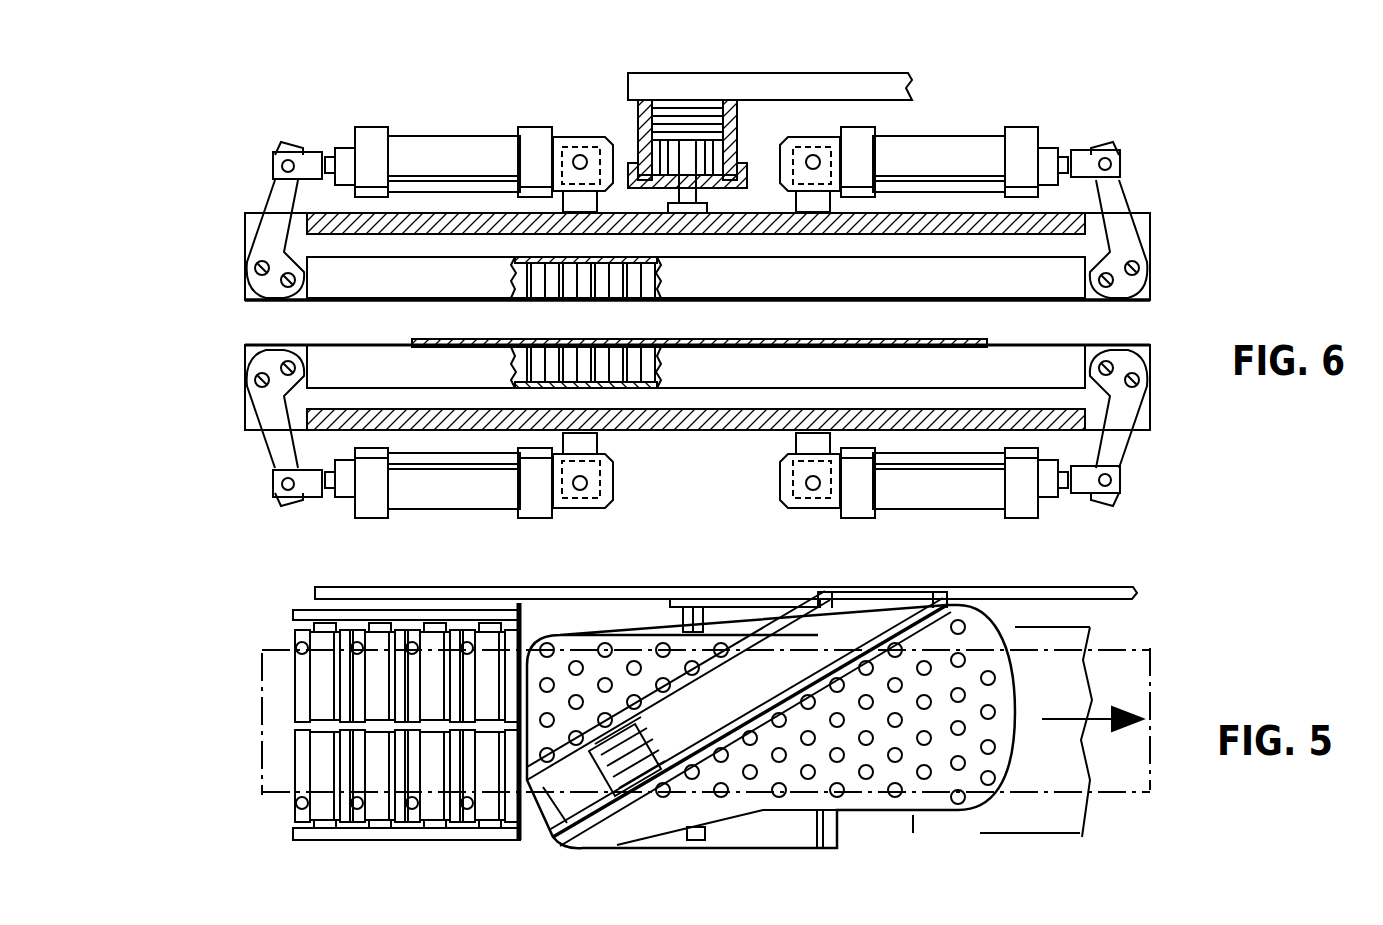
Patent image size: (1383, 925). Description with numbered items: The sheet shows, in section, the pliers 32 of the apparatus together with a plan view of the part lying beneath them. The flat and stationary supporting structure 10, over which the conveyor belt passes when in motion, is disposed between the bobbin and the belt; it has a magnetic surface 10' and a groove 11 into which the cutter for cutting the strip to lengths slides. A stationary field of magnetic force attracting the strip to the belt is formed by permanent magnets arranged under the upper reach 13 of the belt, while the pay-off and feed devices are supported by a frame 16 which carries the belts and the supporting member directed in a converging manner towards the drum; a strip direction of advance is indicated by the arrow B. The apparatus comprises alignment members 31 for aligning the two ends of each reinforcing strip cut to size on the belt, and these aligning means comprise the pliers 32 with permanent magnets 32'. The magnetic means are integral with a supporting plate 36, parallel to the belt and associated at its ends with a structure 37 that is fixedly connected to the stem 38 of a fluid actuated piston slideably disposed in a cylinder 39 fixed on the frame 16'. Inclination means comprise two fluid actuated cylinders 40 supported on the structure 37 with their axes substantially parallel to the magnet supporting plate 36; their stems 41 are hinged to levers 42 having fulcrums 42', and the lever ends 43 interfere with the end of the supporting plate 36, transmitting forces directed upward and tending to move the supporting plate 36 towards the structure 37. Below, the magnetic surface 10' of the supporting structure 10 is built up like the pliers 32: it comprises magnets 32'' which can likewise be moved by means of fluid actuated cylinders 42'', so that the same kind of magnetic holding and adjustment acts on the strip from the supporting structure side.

In FIG. 6, the supporting structure 10 is at (677, 476).
In FIG. 5, the supporting structure 10 is at (771, 697).
In FIG. 6, the magnetic surface 10' is at (1083, 326).
In FIG. 5, the magnetic surface 10' is at (750, 693).
In FIG. 5, the groove 11 is at (895, 638).
In FIG. 5, the upper reach 13 is at (1070, 815).
In FIG. 5, the frame 16 is at (735, 586).
In FIG. 6, the frame 16' is at (770, 59).
In FIG. 6, the alignment members 31 is at (1132, 133).
In FIG. 6, the pliers 32 is at (643, 318).
In FIG. 6, the permanent magnets 32' is at (572, 322).
In FIG. 6, the magnets 32'' is at (699, 326).
In FIG. 5, the magnets 32'' is at (656, 750).
In FIG. 6, the supporting plate 36 is at (385, 290).
In FIG. 6, the structure 37 is at (823, 234).
In FIG. 6, the stem 38 is at (698, 152).
In FIG. 6, the cylinder 39 is at (635, 138).
In FIG. 6, the fluid actuated cylinders 40 is at (462, 140).
In FIG. 6, the stems 41 is at (327, 153).
In FIG. 6, the levers 42 is at (700, 324).
In FIG. 6, the fulcrums 42' is at (693, 305).
In FIG. 6, the fluid actuated cylinders 42'' is at (696, 494).
In FIG. 6, the ends 43 is at (262, 302).
In FIG. 6, the workpiece strip / direction B is at (957, 338).
In FIG. 5, the workpiece strip / direction B is at (1127, 683).